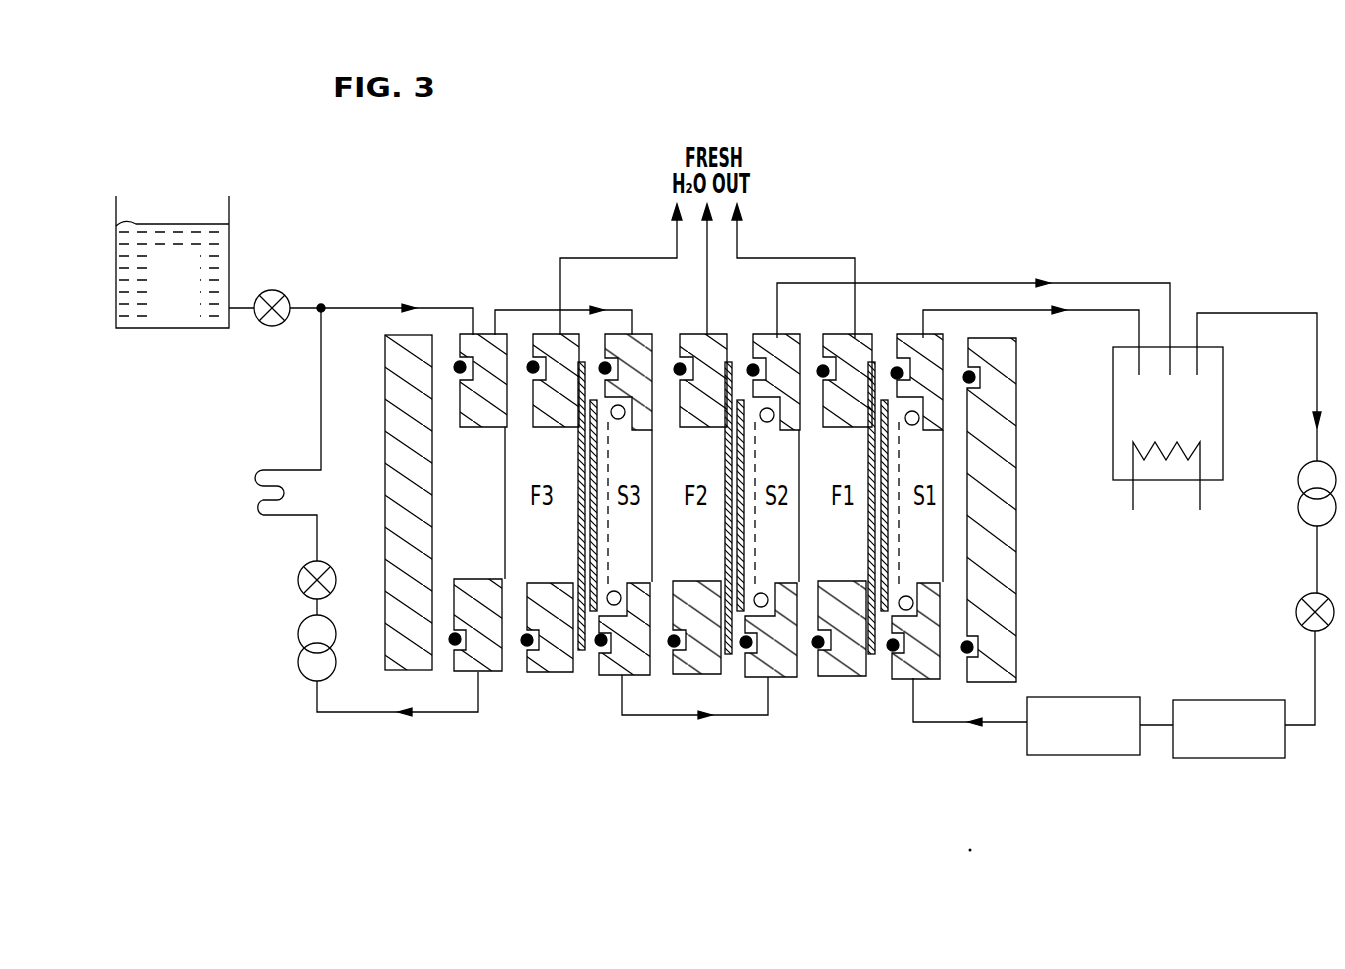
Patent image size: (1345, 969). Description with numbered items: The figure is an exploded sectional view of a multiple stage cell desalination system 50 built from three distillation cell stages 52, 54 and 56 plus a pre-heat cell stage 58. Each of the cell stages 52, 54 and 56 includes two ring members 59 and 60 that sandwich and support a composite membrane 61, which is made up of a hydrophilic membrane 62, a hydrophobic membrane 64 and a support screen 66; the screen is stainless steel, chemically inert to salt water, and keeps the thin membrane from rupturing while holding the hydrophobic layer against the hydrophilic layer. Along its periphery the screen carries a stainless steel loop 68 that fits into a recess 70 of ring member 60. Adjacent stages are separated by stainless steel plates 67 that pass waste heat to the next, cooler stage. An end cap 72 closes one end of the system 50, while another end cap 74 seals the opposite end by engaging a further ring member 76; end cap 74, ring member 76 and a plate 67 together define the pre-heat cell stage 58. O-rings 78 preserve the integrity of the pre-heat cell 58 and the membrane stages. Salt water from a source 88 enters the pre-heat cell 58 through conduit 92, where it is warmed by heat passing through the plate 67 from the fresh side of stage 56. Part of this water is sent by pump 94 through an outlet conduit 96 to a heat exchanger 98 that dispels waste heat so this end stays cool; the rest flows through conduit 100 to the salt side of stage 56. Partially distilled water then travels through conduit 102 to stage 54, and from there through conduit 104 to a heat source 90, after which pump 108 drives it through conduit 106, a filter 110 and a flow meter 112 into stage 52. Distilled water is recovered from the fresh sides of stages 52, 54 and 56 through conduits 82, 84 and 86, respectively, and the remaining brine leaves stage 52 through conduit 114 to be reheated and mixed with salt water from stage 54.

The multiple stage cell desalination system 50 is at (1076, 622).
The cell stage 52 is at (940, 737).
The cell stage 54 is at (782, 735).
The cell stage 56 is at (642, 733).
The pre-heat cell stage 58 is at (497, 733).
The ring member 59 is at (555, 672).
The ring member 60 is at (596, 678).
The composite membrane 61 is at (577, 542).
The hydrophilic membrane 62 is at (601, 486).
The hydrophobic membrane 64 is at (586, 462).
The support screen 66 is at (610, 530).
The stainless steel plate 67 is at (505, 506).
The stainless steel loop 68 is at (778, 382).
The recess 70 is at (628, 432).
The end cap 72 is at (1018, 557).
The end cap 74 is at (385, 402).
The ring member 76 is at (466, 427).
The O-rings 78 is at (606, 366).
The conduit 82 is at (776, 258).
The conduit 84 is at (707, 255).
The conduit 86 is at (588, 258).
The source of salt water 88 is at (230, 266).
The heat source 90 is at (1223, 432).
The conduit 92 is at (340, 309).
The pump 94 is at (299, 644).
The outlet conduit 96 is at (318, 713).
The heat exchanger 98 is at (259, 519).
The conduit 100 is at (626, 297).
The conduit 102 is at (637, 715).
The conduit 104 is at (807, 284).
The conduit 106 is at (1225, 313).
The pump 108 is at (1298, 487).
The filter 110 is at (1244, 694).
The flow meter 112 is at (1043, 716).
The conduit 114 is at (990, 311).